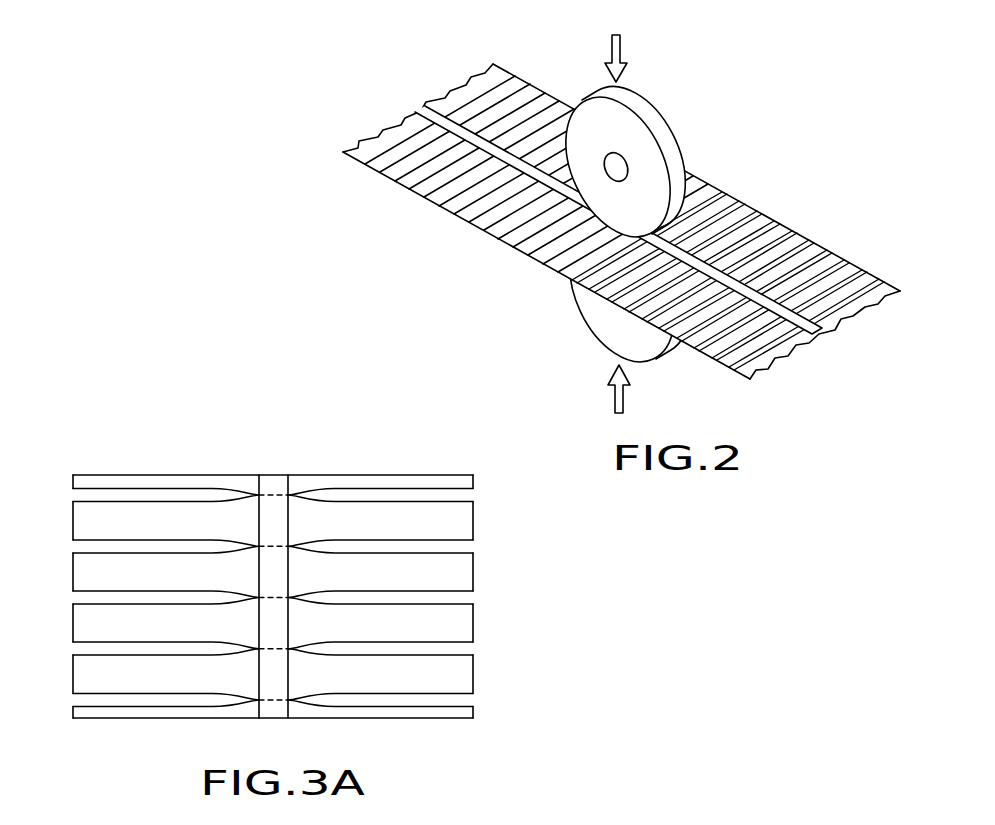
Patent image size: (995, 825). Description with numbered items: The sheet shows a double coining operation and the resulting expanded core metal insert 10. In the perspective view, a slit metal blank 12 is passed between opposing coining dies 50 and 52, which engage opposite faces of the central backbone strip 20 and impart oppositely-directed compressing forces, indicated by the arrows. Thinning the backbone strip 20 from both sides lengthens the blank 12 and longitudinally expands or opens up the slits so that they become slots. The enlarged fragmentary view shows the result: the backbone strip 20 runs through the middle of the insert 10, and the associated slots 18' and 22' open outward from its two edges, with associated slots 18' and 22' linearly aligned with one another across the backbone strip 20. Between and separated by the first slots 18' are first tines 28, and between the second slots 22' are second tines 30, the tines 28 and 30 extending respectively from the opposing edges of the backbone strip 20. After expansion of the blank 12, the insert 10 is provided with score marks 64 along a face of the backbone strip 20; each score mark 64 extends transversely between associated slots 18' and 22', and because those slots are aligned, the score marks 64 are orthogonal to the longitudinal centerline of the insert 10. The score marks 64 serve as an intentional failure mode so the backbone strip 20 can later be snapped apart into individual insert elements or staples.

In FIG. 3A, the core metal insert 10 is at (128, 405).
In FIG. 2, the blank 12 is at (787, 233).
In FIG. 3A, the blank 12 is at (323, 604).
In FIG. 3A, the first slot 18' is at (396, 710).
In FIG. 3A, the backbone strip 20 is at (273, 707).
In FIG. 3A, the second slot 22' is at (166, 713).
In FIG. 3A, the first tine 28 is at (166, 604).
In FIG. 3A, the second tine 30 is at (403, 601).
In FIG. 2, the coining die 50 is at (642, 113).
In FIG. 2, the coining die 52 is at (588, 325).
In FIG. 3A, the score marks 64 is at (272, 547).